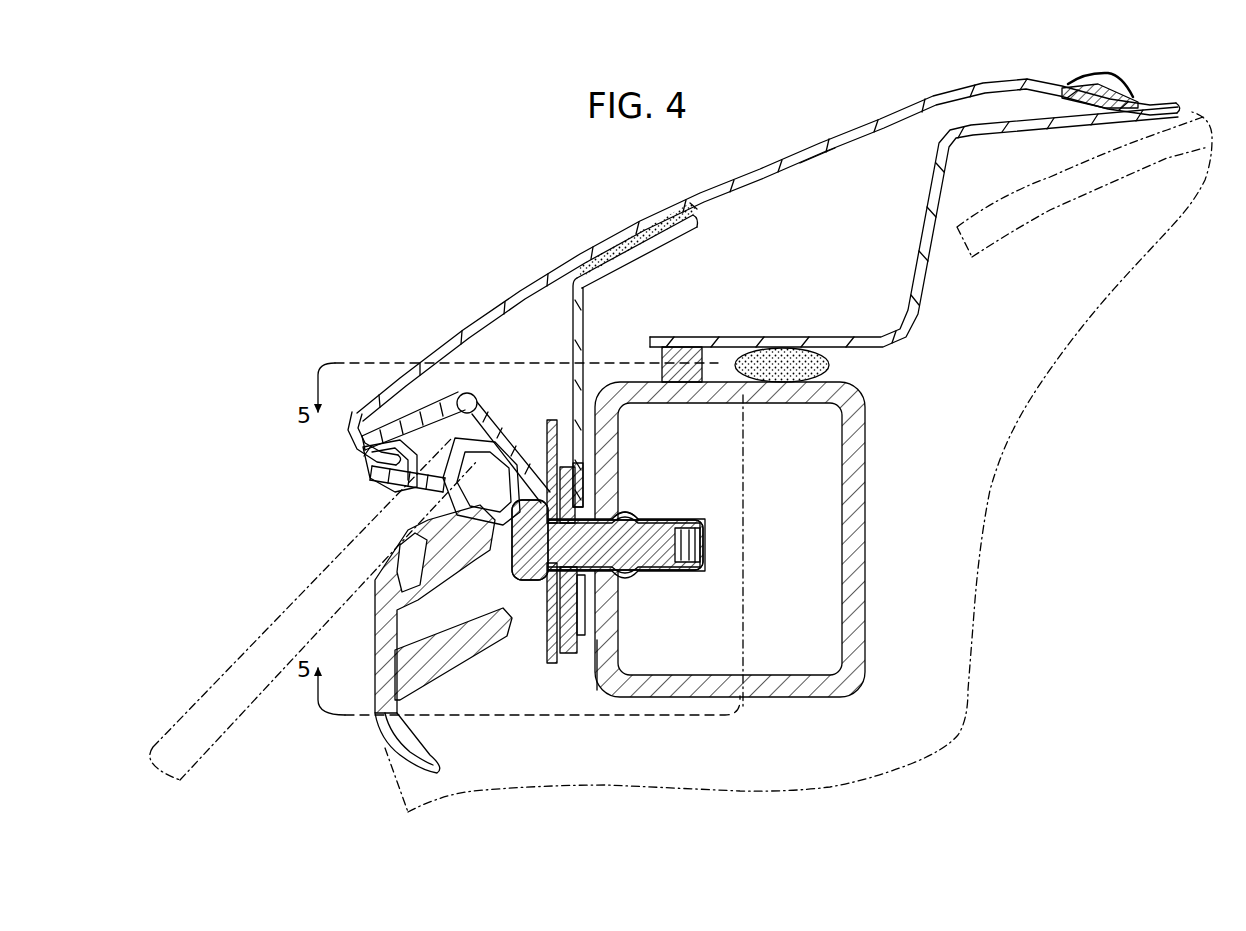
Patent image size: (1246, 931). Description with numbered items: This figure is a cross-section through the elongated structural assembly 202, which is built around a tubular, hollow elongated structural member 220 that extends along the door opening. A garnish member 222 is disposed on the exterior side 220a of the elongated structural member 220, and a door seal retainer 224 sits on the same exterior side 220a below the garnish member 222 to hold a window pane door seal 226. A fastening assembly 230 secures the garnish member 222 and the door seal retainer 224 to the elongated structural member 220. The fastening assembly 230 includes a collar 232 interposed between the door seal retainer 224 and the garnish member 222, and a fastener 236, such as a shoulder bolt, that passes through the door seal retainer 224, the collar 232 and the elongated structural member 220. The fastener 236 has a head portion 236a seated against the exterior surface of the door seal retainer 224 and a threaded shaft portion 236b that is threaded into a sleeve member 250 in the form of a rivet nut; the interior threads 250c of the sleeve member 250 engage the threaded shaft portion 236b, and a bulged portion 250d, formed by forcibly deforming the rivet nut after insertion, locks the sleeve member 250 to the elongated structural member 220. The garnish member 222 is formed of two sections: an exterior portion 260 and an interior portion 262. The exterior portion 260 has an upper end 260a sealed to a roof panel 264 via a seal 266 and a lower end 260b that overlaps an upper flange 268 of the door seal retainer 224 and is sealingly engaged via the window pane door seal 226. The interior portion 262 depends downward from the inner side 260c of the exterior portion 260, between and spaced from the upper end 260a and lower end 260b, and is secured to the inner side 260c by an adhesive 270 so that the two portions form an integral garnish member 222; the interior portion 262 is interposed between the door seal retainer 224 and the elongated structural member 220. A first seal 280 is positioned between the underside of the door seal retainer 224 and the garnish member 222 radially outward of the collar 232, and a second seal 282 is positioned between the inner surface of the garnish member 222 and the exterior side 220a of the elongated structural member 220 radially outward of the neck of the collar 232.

The elongated structural assembly 202 is at (500, 257).
The elongated structural member 220 is at (880, 527).
The exterior side 220a is at (592, 640).
The garnish member 222 is at (732, 222).
The door seal retainer 224 is at (520, 440).
The window pane door seal 226 is at (430, 463).
The fastening assembly 230 is at (537, 597).
The collar 232 is at (588, 600).
The fastener 236 is at (652, 533).
The head portion 236a is at (512, 537).
The threaded shaft portion 236b is at (677, 547).
The sleeve member 250 is at (687, 568).
The interior threads 250c is at (700, 530).
The bulged portion 250d is at (632, 510).
The exterior portion 260 is at (800, 150).
The upper end 260a is at (1070, 76).
The lower end 260b is at (367, 423).
The inner side 260c is at (847, 142).
The interior portion 262 is at (590, 322).
The roof panel 264 is at (1007, 132).
The seal 266 is at (1120, 93).
The upper flange 268 is at (392, 428).
The adhesive 270 is at (618, 234).
The first seal 280 is at (565, 420).
The second seal 282 is at (570, 612).